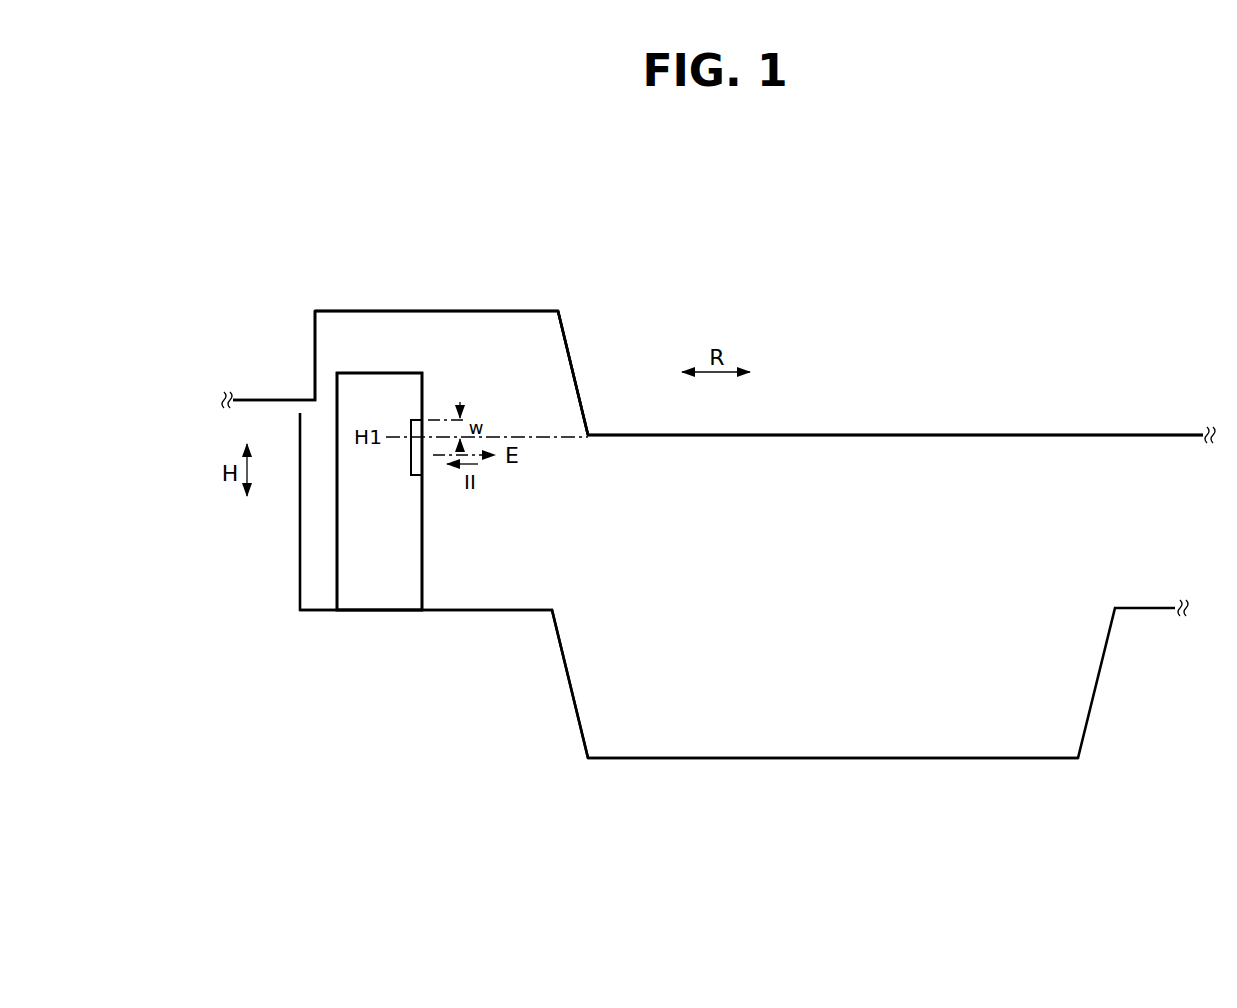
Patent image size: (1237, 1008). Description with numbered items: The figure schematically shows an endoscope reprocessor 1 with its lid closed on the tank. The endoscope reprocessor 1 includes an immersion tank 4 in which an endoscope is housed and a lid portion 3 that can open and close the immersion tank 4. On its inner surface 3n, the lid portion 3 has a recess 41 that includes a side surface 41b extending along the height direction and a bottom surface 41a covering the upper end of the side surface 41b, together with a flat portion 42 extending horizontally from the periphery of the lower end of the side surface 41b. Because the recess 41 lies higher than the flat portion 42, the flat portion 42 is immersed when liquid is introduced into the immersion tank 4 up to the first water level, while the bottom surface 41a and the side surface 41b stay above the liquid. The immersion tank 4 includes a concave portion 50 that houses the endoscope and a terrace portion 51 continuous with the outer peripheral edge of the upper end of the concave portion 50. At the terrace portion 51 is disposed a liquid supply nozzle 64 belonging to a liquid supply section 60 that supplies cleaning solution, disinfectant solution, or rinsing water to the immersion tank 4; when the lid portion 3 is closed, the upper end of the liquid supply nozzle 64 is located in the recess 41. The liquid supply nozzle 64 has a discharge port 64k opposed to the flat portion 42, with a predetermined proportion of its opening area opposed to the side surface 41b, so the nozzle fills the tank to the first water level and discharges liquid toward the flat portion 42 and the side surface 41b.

The endoscope reprocessor 1 is at (1092, 238).
The lid portion 3 is at (1014, 431).
The inner surface 3n is at (558, 184).
The immersion tank 4 is at (1101, 690).
The recess 41 is at (518, 223).
The bottom surface 41a is at (502, 310).
The side surface 41b is at (570, 356).
The flat portion 42 is at (830, 435).
The concave portion 50 is at (835, 760).
The terrace portion 51 is at (502, 612).
The liquid supply section 60 is at (291, 491).
The liquid supply nozzle 64 is at (378, 552).
The discharge port 64k is at (426, 465).